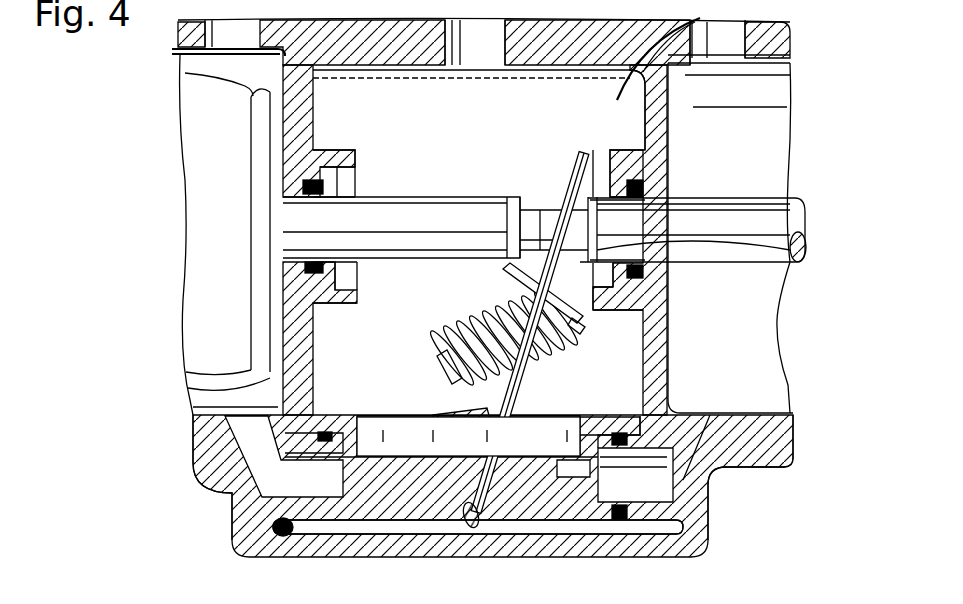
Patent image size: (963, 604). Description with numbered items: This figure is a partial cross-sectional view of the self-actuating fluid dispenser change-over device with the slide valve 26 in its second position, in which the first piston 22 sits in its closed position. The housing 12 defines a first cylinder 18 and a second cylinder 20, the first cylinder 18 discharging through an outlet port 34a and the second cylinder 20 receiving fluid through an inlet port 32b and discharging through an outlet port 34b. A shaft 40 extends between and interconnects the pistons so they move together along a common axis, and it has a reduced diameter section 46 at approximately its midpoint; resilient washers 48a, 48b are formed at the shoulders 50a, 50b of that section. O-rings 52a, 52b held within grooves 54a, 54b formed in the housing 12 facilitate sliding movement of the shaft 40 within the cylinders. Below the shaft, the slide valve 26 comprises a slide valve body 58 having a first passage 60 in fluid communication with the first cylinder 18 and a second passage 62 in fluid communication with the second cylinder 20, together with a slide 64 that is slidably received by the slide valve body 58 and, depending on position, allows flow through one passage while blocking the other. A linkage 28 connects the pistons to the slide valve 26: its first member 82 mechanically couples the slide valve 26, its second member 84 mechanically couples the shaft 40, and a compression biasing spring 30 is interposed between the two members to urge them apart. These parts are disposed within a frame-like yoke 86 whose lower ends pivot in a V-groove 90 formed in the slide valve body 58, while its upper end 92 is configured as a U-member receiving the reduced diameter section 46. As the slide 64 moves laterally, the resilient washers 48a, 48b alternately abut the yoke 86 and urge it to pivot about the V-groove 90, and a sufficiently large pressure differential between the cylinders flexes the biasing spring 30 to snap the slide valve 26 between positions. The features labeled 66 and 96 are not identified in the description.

The housing 12 is at (200, 438).
The first cylinder 18 is at (190, 52).
The second cylinder 20 is at (757, 92).
The first piston 22 is at (207, 232).
The slide valve 26 is at (420, 398).
The linkage 28 is at (438, 319).
The biasing spring 30 is at (560, 347).
The inlet port 32b is at (733, 43).
The outlet port 34a is at (233, 513).
The outlet port 34b is at (673, 470).
The shaft 40 is at (733, 220).
The reduced diameter section 46 is at (543, 225).
The resilient washer 48a is at (513, 207).
The resilient washer 48b is at (597, 250).
The shoulder 50a is at (493, 235).
The shoulder 50b is at (807, 250).
The O-ring 52a is at (316, 150).
The O-ring 52b is at (627, 190).
The groove 54a is at (292, 186).
The groove 54b is at (637, 178).
The slide valve body 58 is at (587, 580).
The first passage 60 is at (383, 490).
The second passage 62 is at (607, 0).
The slide 64 is at (412, 447).
The bore 66 is at (213, 0).
The first member 82 is at (457, 383).
The second member 84 is at (593, 315).
The yoke 86 is at (520, 390).
The V-groove 90 is at (495, 574).
The upper end 92 is at (574, 180).
The bore 96 is at (483, 55).